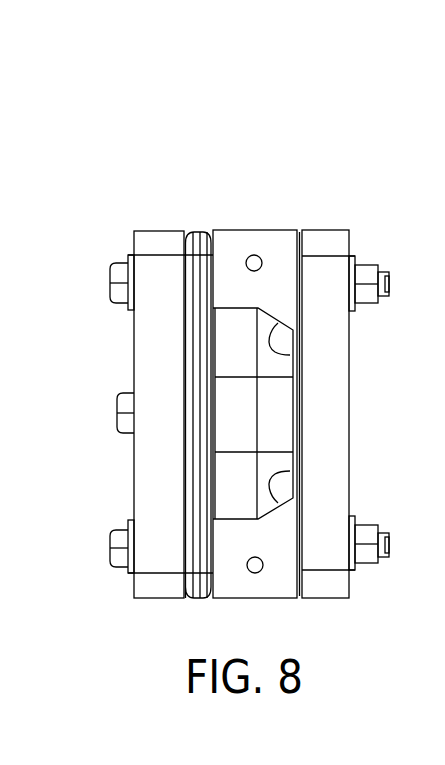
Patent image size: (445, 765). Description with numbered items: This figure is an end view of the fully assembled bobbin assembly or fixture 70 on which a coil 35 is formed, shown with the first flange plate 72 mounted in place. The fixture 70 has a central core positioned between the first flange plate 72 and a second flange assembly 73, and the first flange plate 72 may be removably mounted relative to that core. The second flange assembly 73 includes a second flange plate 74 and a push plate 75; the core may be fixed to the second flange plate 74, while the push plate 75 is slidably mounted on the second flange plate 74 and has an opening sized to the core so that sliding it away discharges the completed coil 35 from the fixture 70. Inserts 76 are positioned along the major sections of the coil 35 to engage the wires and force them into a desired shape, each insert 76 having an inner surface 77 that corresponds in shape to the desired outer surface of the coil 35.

The fixture 70 is at (180, 122).
The first flange plate 72 is at (328, 237).
The second flange assembly 73 is at (164, 197).
The second flange plate 74 is at (147, 240).
The push plate 75 is at (198, 232).
The insert 76 is at (272, 237).
The inner surface 77 is at (290, 355).
The coil 35 is at (240, 503).